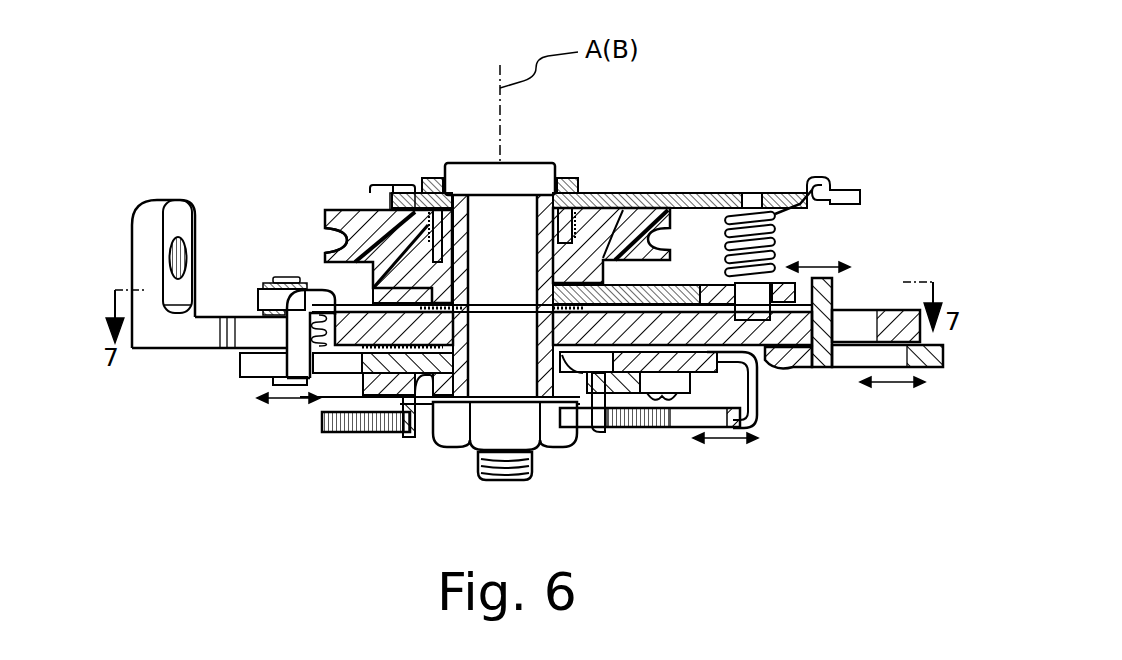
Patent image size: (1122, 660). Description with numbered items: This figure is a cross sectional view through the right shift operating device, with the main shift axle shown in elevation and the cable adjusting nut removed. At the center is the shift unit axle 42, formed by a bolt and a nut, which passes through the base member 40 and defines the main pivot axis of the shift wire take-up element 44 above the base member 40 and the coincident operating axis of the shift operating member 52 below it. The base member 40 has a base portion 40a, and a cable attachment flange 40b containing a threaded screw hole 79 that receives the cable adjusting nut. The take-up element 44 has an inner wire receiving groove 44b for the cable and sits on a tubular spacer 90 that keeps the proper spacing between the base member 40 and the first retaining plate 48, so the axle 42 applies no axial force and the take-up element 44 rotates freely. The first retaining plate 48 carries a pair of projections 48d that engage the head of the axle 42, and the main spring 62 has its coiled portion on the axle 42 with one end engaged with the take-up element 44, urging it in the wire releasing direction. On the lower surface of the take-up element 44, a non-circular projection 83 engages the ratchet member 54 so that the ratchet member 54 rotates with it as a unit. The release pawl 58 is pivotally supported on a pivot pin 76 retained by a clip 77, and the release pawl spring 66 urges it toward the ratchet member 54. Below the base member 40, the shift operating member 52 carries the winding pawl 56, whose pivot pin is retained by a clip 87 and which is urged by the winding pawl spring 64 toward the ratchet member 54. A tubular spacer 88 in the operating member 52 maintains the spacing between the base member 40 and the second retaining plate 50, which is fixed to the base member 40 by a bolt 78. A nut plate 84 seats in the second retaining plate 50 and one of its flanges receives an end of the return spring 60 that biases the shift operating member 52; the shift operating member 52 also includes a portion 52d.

The base member 40 is at (155, 360).
The base portion 40a is at (208, 317).
The cable attachment flange 40b is at (160, 199).
The shift unit axle 42 is at (490, 482).
The shift wire take-up element 44 is at (350, 199).
The inner wire receiving groove 44b is at (335, 258).
The first retaining plate 48 is at (704, 180).
The projections 48d is at (433, 178).
The second retaining plate 50 is at (356, 393).
The shift operating member 52 is at (935, 380).
The flange of rail 52d is at (833, 300).
The ratchet member 54 is at (688, 192).
The winding pawl 56 is at (256, 289).
The release pawl 58 is at (802, 362).
The return spring 60 is at (352, 432).
The main spring 62 is at (387, 185).
The winding pawl spring 64 is at (335, 298).
The release pawl spring 66 is at (762, 240).
The pivot pin 76 is at (757, 192).
The clip 77 is at (790, 318).
The bolt 78 is at (700, 428).
The threaded screw hole 79 is at (178, 236).
The non-circular projection 83 is at (680, 272).
The nut plate 84 is at (450, 448).
The clip 87 is at (270, 378).
The tubular spacer 88 is at (605, 430).
The tubular spacer 90 is at (594, 259).